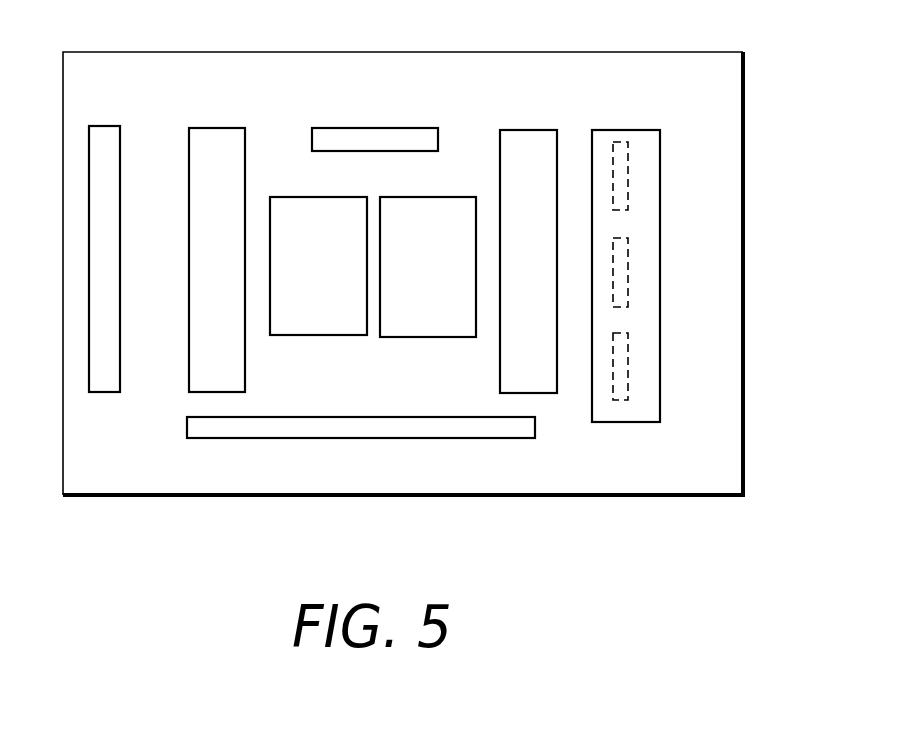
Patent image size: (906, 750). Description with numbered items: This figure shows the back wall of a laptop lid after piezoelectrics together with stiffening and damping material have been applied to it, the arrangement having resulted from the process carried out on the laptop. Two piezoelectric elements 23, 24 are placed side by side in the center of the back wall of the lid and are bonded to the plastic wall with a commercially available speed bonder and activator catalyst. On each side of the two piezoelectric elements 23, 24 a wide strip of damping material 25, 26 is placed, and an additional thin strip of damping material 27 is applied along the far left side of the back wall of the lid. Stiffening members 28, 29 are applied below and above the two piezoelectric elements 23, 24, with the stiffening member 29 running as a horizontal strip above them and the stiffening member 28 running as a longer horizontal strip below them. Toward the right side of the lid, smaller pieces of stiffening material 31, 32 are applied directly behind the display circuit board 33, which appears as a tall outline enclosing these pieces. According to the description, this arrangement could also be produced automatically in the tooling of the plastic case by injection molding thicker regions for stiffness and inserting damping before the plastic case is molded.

The piezoelectric element 23 is at (315, 336).
The piezoelectric element 24 is at (437, 337).
The damping material 25 is at (217, 128).
The damping material 26 is at (530, 130).
The damping material 27 is at (108, 126).
The stiffening member 28 is at (350, 438).
The stiffening member 29 is at (362, 128).
The stiffening material 31 is at (627, 186).
The stiffening material 32 is at (627, 277).
The display circuit board 33 is at (628, 130).